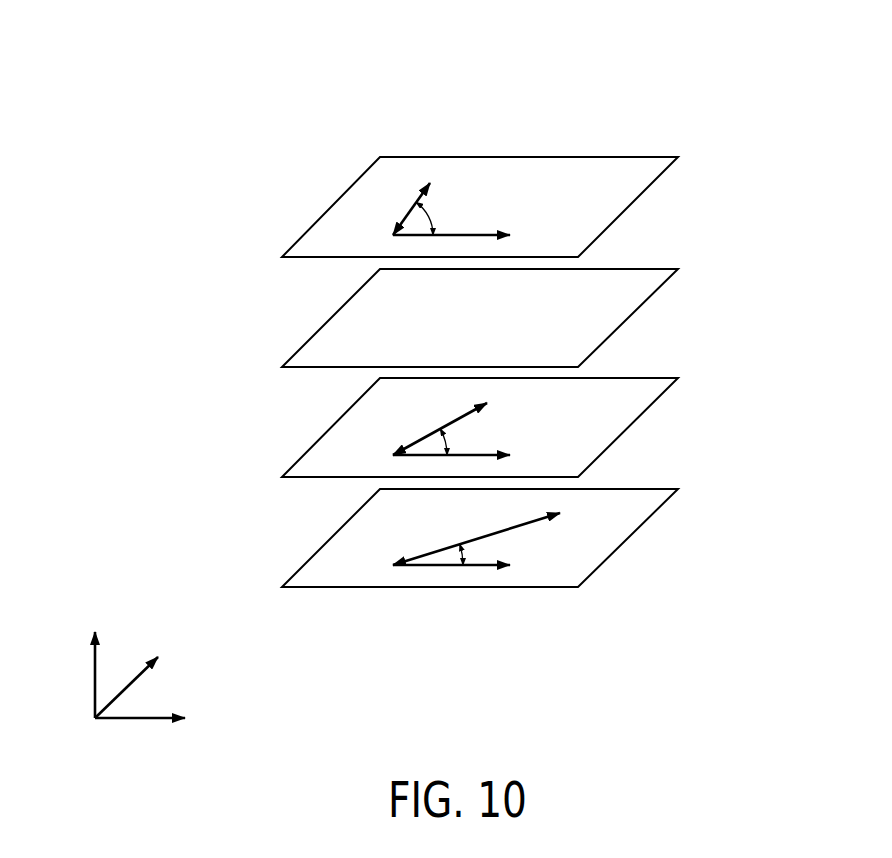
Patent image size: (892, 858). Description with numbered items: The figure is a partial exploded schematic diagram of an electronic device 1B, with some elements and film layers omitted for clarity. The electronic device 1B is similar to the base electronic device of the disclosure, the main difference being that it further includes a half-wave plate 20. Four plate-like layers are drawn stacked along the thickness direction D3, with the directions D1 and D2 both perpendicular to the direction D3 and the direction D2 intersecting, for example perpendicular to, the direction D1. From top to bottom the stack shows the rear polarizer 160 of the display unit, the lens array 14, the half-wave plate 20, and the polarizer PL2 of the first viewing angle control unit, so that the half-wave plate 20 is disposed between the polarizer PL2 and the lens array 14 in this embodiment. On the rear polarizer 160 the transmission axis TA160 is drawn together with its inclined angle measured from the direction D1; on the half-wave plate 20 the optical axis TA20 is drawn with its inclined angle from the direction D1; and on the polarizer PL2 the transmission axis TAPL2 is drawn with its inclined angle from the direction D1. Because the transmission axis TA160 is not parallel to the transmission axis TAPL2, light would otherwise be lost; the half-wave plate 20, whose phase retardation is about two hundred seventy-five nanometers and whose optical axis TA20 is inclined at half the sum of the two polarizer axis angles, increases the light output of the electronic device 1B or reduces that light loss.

The electronic device 1B is at (682, 73).
The rear polarizer 160 is at (325, 235).
The transmission axis of the rear polarizer TA160 is at (407, 218).
The lens array 14 is at (326, 345).
The half-wave plate 20 is at (326, 455).
The optical axis of the half-wave plate TA20 is at (422, 438).
The polarizer of the first viewing angle control unit PL2 is at (326, 565).
The transmission axis of the polarizer PL2 TAPL2 is at (435, 552).
The direction D1 is at (321, 477).
The direction D2 is at (142, 673).
The direction D3 is at (95, 656).